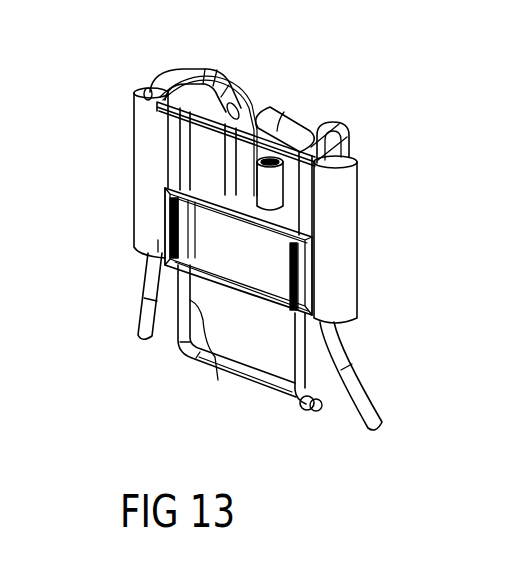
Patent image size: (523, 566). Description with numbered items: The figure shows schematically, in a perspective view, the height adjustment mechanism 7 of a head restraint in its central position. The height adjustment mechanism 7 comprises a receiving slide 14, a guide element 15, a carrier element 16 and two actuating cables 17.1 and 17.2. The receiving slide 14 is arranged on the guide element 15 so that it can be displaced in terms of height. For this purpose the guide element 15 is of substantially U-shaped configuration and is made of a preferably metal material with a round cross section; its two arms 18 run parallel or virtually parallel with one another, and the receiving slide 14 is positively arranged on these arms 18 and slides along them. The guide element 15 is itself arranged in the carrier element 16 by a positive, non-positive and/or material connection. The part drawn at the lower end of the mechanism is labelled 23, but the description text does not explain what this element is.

The height adjustment mechanism 7 is at (401, 54).
The receiving slide 14 is at (205, 246).
The guide element 15 is at (320, 407).
The carrier element 16 is at (145, 175).
The actuating cable 17.1 is at (185, 70).
The actuating cable 17.2 is at (345, 138).
The arms 18 is at (185, 298).
The lower housing 23 is at (235, 395).